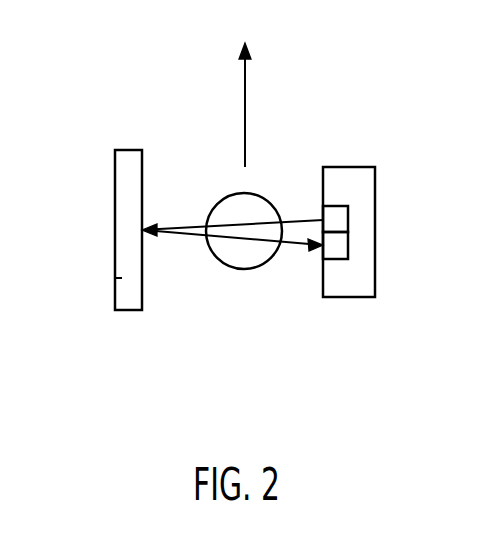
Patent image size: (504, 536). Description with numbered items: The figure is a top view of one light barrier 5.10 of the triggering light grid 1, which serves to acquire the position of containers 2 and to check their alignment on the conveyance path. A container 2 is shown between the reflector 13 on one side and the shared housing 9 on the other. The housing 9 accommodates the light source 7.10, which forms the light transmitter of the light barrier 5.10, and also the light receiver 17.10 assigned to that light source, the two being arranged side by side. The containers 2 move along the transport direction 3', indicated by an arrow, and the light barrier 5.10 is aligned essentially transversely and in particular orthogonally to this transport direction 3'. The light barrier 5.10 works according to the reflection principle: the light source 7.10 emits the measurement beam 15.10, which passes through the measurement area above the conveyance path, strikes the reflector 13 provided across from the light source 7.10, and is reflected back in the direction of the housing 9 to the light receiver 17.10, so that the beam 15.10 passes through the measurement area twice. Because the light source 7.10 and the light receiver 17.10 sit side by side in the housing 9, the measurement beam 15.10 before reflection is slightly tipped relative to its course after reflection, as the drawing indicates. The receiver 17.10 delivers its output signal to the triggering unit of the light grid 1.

The triggering light grid 1 is at (370, 84).
The container 2 is at (233, 270).
The transport direction 3' is at (268, 105).
The light barrier 5.10 is at (92, 134).
The light source 7.10 is at (341, 222).
The housing 9 is at (362, 285).
The reflector 13 is at (122, 278).
The measurement beam 15.10 is at (293, 218).
The light receiver 17.10 is at (341, 248).